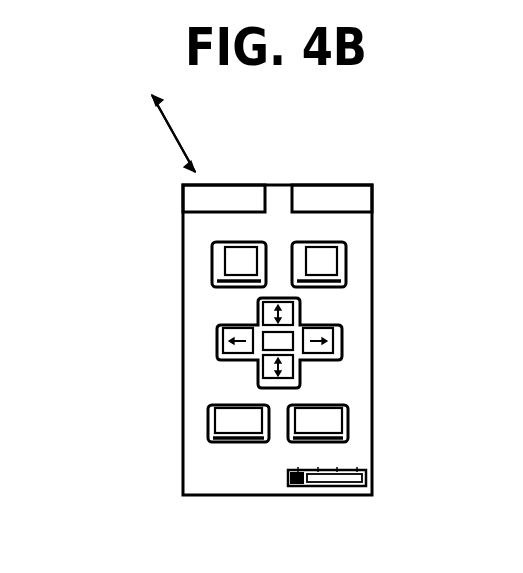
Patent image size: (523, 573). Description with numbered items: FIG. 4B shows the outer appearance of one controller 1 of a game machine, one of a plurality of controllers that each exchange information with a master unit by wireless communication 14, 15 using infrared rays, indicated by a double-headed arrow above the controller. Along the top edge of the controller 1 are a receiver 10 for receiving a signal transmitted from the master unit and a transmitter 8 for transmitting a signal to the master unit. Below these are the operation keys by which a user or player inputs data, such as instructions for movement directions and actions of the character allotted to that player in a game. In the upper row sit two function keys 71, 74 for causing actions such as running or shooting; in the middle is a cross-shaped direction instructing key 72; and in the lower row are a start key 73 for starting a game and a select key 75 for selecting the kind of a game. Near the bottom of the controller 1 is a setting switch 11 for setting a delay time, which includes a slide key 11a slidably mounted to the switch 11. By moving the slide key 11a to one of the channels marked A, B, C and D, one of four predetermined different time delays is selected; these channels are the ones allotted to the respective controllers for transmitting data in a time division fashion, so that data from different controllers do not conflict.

The controller 1 is at (208, 495).
The transmitter 8 is at (322, 200).
The receiver 10 is at (225, 194).
The setting switch 11 is at (366, 477).
The slide key 11a is at (302, 485).
The wireless communication 14 is at (173, 130).
The wireless communication 15 is at (173, 133).
The function key 71 is at (212, 260).
The direction instructing key 72 is at (217, 345).
The start key 73 is at (208, 423).
The function key 74 is at (346, 262).
The select key 75 is at (348, 423).